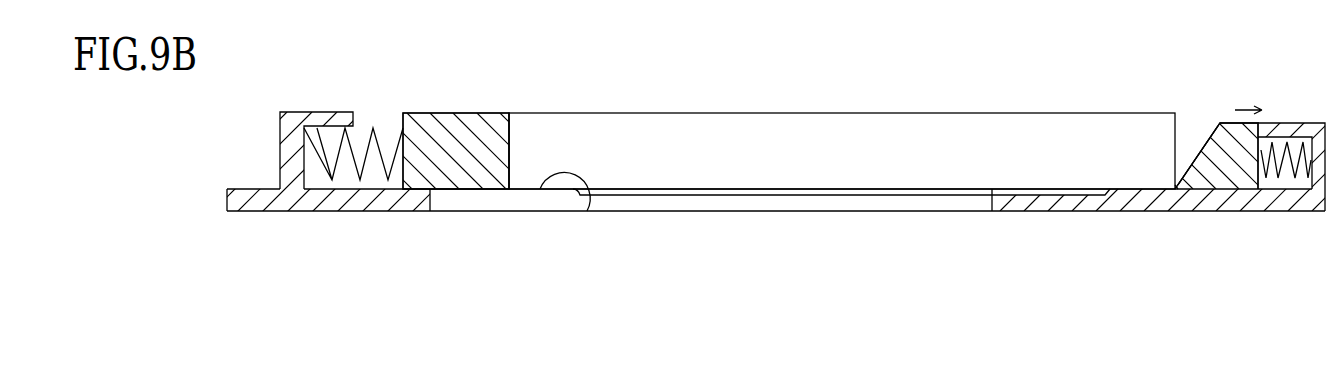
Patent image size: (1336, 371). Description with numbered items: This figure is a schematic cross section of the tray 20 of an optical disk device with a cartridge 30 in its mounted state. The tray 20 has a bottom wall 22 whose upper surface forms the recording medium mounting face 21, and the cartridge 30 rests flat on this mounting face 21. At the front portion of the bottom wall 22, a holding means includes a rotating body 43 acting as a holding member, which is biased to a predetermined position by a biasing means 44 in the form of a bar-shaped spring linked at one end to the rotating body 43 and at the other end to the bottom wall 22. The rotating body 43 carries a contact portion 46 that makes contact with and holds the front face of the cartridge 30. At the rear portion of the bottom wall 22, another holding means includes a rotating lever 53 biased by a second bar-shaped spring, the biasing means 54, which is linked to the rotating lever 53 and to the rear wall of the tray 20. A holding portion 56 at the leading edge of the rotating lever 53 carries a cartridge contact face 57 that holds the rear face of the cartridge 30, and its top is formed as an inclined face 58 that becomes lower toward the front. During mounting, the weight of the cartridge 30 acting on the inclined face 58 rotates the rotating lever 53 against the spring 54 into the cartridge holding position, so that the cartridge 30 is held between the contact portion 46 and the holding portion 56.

The tray 20 is at (337, 207).
The recording medium mounting face 21 is at (587, 211).
The bottom wall 22 is at (695, 200).
The cartridge 30 is at (793, 113).
The rotating body 43 is at (456, 151).
The biasing means 44 is at (353, 145).
The contact portion 46 is at (443, 133).
The rotating lever 53 is at (1216, 156).
The biasing means 54 is at (1292, 174).
The holding portion 56 is at (1200, 173).
The cartridge contact face 57 is at (1163, 178).
The inclined face 58 is at (1193, 143).